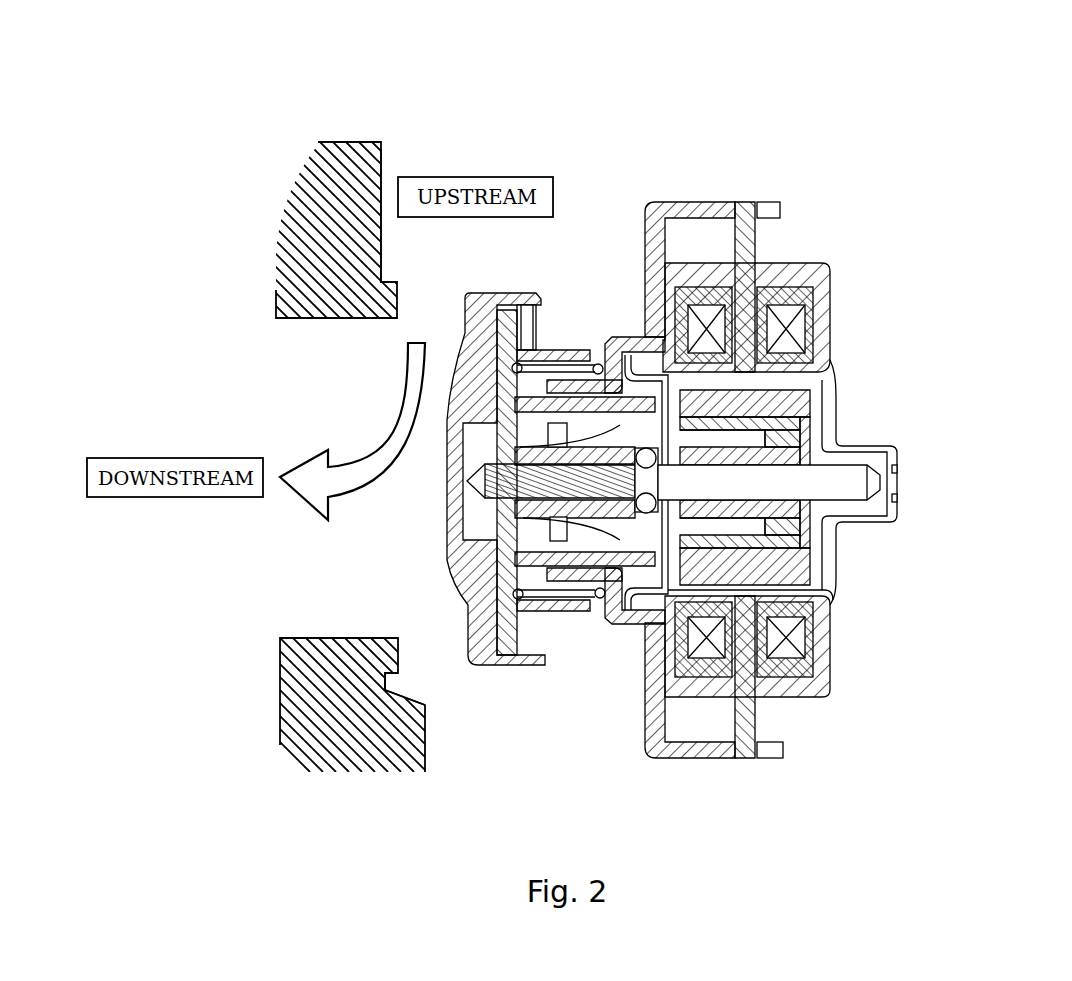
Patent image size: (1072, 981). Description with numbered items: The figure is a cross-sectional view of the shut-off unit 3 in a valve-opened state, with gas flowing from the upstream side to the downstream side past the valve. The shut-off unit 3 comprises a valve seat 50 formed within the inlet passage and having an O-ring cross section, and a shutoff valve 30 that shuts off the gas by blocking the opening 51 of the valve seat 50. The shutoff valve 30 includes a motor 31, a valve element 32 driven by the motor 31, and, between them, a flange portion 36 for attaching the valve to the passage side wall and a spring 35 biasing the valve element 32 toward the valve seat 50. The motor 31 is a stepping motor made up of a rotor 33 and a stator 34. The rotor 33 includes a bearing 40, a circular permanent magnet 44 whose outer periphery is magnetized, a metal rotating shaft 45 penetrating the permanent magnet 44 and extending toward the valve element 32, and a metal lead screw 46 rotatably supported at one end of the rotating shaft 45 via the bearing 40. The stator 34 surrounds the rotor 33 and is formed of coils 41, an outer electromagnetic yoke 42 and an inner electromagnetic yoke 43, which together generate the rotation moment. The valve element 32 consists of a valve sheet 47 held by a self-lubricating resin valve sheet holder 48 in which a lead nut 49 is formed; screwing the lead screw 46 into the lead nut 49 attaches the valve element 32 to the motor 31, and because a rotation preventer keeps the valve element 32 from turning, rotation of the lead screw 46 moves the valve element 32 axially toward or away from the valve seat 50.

The shut-off unit 3 is at (410, 790).
The shutoff valve 30 is at (767, 160).
The motor 31 is at (848, 498).
The valve element 32 is at (640, 566).
The rotor 33 is at (820, 610).
The stator 34 is at (828, 431).
The spring 35 is at (588, 495).
The flange portion 36 is at (697, 760).
The bearing 40 is at (657, 480).
The coils 41 is at (777, 307).
The outer electromagnetic yoke 42 is at (750, 340).
The inner electromagnetic yoke 43 is at (823, 303).
The permanent magnet 44 is at (687, 490).
The rotating shaft 45 is at (678, 512).
The lead screw 46 is at (700, 565).
The valve sheet 47 is at (495, 667).
The valve sheet holder 48 is at (510, 655).
The lead nut 49 is at (558, 617).
The valve seat 50 is at (398, 663).
The opening 51 is at (388, 595).